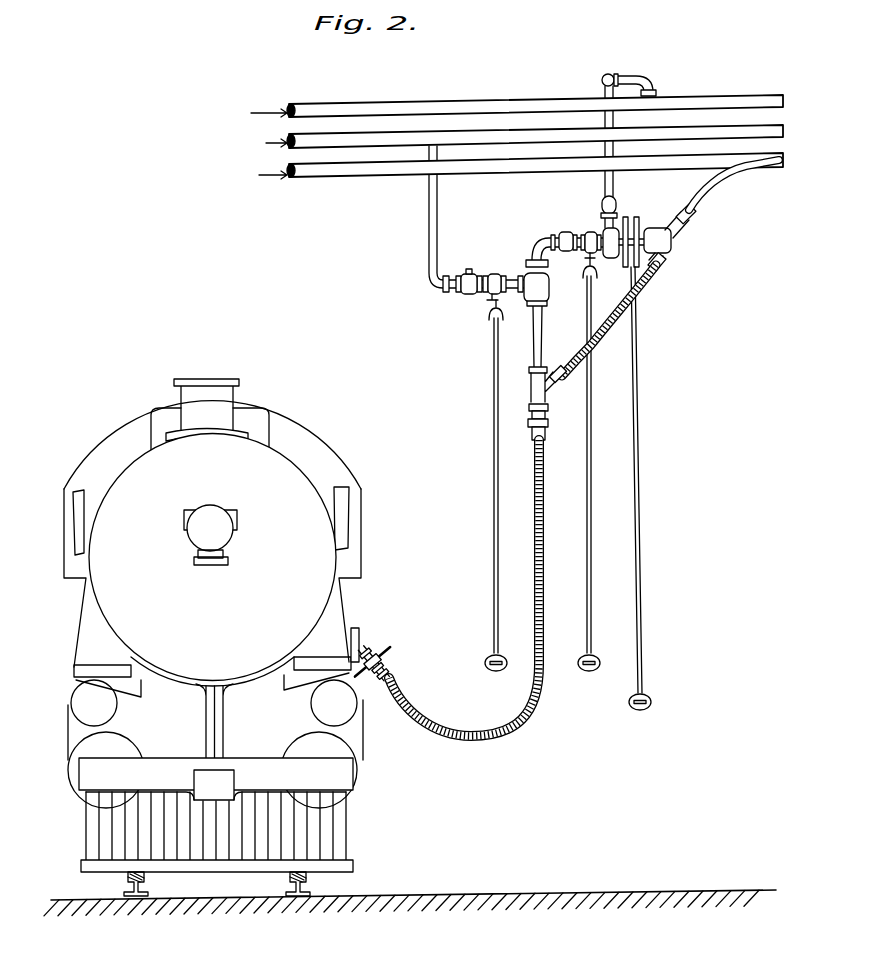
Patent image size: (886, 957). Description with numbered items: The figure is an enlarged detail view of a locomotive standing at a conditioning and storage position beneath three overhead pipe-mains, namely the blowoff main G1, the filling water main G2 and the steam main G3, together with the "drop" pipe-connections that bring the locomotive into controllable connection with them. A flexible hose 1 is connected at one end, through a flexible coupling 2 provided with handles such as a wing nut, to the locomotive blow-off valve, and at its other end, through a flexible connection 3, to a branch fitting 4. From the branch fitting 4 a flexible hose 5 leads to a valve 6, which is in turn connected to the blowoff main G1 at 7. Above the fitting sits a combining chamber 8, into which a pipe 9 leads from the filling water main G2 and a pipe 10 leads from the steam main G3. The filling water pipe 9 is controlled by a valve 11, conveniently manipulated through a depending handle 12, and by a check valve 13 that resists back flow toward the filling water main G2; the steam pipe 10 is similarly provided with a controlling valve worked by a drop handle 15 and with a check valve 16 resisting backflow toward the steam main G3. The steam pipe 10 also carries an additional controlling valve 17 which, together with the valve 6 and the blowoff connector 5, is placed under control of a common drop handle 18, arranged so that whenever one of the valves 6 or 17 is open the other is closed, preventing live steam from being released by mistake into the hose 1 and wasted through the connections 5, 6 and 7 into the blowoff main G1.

The flexible hose 1 is at (542, 708).
The flexible coupling 2 is at (390, 663).
The flexible connection 3 is at (523, 433).
The branch fitting 4 is at (545, 390).
The flexible hose 5 is at (620, 323).
The valve 6 is at (671, 250).
The connection to blowoff main 7 is at (768, 164).
The combining chamber 8 is at (545, 290).
The filling water pipe 9 is at (436, 220).
The steam pipe 10 is at (623, 77).
The valve 11 is at (490, 278).
The depending handle 12 is at (493, 640).
The check valve 13 is at (470, 300).
The drop handle 15 is at (590, 637).
The check valve 16 is at (582, 254).
The controlling valve 17 is at (613, 259).
The drop handle 18 is at (641, 637).
The blowoff main G1 is at (343, 176).
The filling water main G2 is at (382, 148).
The steam main G3 is at (410, 118).